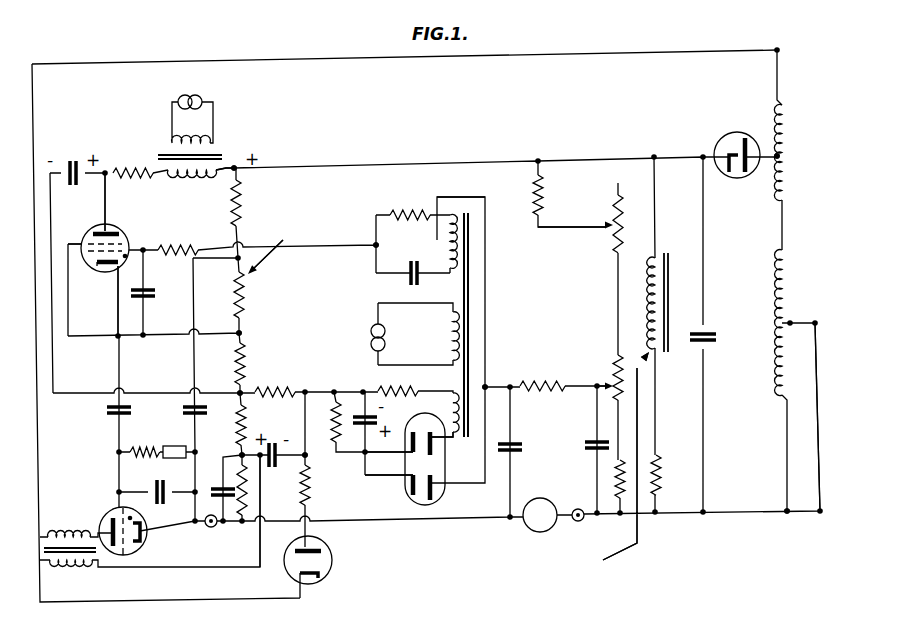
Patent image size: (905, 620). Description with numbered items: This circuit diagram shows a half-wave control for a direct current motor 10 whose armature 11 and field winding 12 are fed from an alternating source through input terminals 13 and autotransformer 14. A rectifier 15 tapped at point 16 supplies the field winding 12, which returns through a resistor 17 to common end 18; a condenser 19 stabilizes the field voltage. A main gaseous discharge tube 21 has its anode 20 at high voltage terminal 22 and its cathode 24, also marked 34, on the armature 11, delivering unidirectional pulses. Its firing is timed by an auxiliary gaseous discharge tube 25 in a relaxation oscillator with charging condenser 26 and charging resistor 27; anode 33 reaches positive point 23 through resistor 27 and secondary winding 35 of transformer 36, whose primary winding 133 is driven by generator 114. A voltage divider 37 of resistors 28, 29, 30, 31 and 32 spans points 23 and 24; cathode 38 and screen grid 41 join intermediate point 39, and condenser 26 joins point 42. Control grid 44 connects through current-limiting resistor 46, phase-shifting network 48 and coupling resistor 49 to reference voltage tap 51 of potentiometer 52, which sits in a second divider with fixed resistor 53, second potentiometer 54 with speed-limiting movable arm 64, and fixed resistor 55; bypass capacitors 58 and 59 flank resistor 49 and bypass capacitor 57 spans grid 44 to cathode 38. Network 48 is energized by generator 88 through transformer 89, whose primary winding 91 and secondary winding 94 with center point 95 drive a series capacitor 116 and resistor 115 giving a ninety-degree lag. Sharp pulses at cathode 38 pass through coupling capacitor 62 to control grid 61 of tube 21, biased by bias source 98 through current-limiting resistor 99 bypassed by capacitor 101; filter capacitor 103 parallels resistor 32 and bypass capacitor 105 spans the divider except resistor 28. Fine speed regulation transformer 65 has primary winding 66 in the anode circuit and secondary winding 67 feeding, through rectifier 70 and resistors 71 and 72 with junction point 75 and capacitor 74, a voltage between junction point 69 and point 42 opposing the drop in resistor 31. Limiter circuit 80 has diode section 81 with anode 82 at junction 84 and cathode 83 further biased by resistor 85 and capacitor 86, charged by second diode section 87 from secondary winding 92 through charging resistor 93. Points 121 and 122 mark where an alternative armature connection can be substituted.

The direct current motor 10 is at (613, 464).
The armature 11 is at (534, 529).
The field winding 12 is at (649, 312).
The input terminals 13 is at (816, 360).
The autotransformer 14 is at (785, 204).
The current rectifier 15 is at (716, 146).
The point 16 is at (775, 160).
The resistor 17 is at (661, 466).
The common end 18 is at (788, 514).
The condenser 19 is at (707, 331).
The anode 20 is at (110, 526).
The main grid controlled gaseous discharge tube 21 is at (142, 532).
The remaining end of autotransformer 22 is at (776, 49).
The positive point 23 is at (240, 171).
The cathode 24 is at (246, 527).
The auxiliary gaseous discharge tube 25 is at (96, 270).
The charging condenser 26 is at (72, 159).
The charging resistor 27 is at (129, 168).
The resistor 28 is at (231, 205).
The resistor 29 is at (247, 285).
The resistor 30 is at (247, 365).
The resistor 31 is at (246, 420).
The resistor 32 is at (249, 495).
The anode 33 is at (101, 230).
The cathode 34 is at (125, 556).
The secondary winding 35 is at (242, 166).
The transformer 36 is at (165, 153).
The voltage divider 37 is at (271, 244).
The cathode 38 is at (104, 270).
The intermediate point 39 is at (243, 331).
The screen grid 41 is at (66, 248).
The intermediate point 42 is at (238, 392).
The control grid 44 is at (128, 240).
The current-limiting resistor 46 is at (180, 247).
The phase-shifting network 48 is at (405, 259).
The coupling resistor 49 is at (540, 384).
The reference voltage tap 51 is at (600, 381).
The potentiometer 52 is at (613, 386).
The fixed resistor 53 is at (545, 208).
The second potentiometer 54 is at (624, 218).
The fixed resistor 55 is at (613, 482).
The bypass capacitor 57 is at (150, 292).
The bypass capacitor 58 is at (587, 449).
The bypass capacitor 59 is at (519, 447).
The control grid 61 is at (121, 506).
The coupling capacitor 62 is at (106, 410).
The movable arm 64 is at (570, 230).
The transformer 65 is at (43, 556).
The primary winding 66 is at (64, 530).
The secondary winding 67 is at (70, 566).
The junction point 69 is at (240, 454).
The rectifier 70 is at (326, 578).
The resistor 71 is at (312, 485).
The resistor 72 is at (270, 391).
The capacitor 74 is at (275, 446).
The junction point 75 is at (308, 456).
The limiter circuit 80 is at (397, 469).
The diode section 81 is at (420, 506).
The anode 82 is at (436, 488).
The cathode 83 is at (406, 488).
The junction 84 is at (488, 385).
The resistor 85 is at (326, 406).
The capacitor 86 is at (358, 391).
The second diode section 87 is at (442, 412).
The generator 88 is at (362, 349).
The transformer 89 is at (469, 292).
The primary winding 91 is at (461, 322).
The secondary winding 92 is at (456, 440).
The charging resistor 93 is at (396, 390).
The secondary winding 94 is at (452, 226).
The center point 95 is at (462, 250).
The bias source 98 is at (176, 459).
The current-limiting resistor 99 is at (145, 439).
The capacitor 101 is at (152, 482).
The filter capacitor 103 is at (214, 491).
The bypass capacitor 105 is at (190, 403).
The generator 114 is at (200, 100).
The resistor 115 is at (400, 213).
The capacitor 116 is at (404, 276).
The point 121 is at (211, 528).
The point 122 is at (582, 520).
The transformer secondary 133 is at (212, 140).